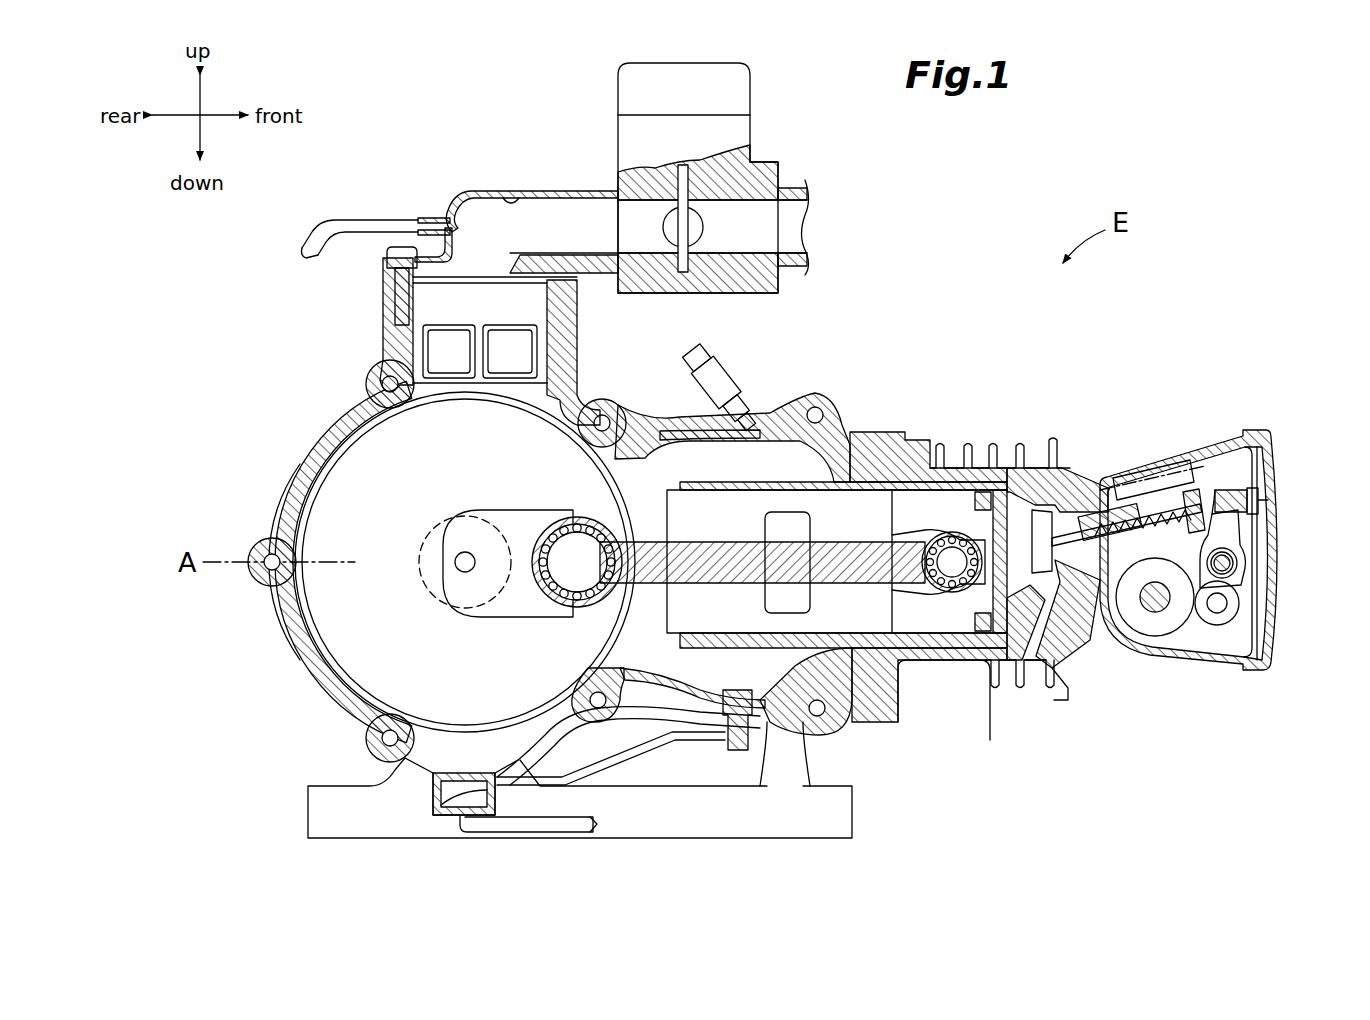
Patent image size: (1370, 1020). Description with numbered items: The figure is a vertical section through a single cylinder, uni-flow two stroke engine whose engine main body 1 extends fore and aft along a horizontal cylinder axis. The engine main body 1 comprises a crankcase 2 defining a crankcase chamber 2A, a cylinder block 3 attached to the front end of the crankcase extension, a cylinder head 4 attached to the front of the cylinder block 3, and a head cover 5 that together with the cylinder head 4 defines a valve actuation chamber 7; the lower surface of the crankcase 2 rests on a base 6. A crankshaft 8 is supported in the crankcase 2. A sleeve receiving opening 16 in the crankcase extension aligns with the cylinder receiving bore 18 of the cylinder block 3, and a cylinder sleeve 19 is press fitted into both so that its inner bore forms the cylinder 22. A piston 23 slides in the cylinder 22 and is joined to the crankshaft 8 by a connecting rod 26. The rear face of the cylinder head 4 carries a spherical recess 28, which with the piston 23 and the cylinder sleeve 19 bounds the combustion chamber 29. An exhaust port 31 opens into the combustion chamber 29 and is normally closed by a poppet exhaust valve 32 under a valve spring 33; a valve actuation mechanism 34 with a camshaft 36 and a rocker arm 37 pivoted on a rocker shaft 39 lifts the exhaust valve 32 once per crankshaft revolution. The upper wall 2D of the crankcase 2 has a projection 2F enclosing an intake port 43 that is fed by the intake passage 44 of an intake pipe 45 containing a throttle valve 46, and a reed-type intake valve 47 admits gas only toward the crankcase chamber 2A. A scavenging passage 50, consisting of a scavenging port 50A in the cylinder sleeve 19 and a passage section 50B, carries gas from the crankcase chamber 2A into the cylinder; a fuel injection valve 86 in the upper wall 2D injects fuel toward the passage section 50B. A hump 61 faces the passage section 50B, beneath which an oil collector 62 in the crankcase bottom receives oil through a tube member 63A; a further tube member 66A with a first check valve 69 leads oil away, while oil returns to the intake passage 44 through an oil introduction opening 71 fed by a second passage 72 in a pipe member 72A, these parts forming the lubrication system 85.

The engine main body 1 is at (1028, 712).
The crankcase 2 is at (312, 470).
The crankcase chamber 2A is at (380, 527).
The upper wall 2D is at (606, 414).
The projection 2F is at (577, 322).
The cylinder block 3 is at (885, 690).
The cylinder head 4 is at (1055, 698).
The head cover 5 is at (1270, 632).
The base 6 is at (852, 812).
The valve actuation chamber 7 is at (1232, 655).
The crankshaft 8 is at (348, 625).
The sleeve receiving opening 16 is at (866, 482).
The cylinder receiving bore 18 is at (928, 482).
The cylinder sleeve 19 is at (828, 645).
The cylinder 22 is at (710, 636).
The piston 23 is at (975, 640).
The connecting rod 26 is at (708, 556).
The spherical recess 28 is at (1040, 632).
The combustion chamber 29 is at (1016, 468).
The exhaust port 31 is at (1088, 510).
The exhaust valve 32 is at (1048, 500).
The valve spring 33 is at (1165, 490).
The valve actuation mechanism 34 is at (1192, 650).
The camshaft 36 is at (1157, 635).
The rocker arm 37 is at (1240, 588).
The rocker shaft 39 is at (1240, 556).
The intake port 43 is at (412, 295).
The intake passage 44 is at (512, 192).
The intake pipe 45 is at (555, 191).
The throttle valve 46 is at (698, 268).
The intake valve 47 is at (447, 372).
The scavenging passage 50 is at (768, 450).
The scavenging port 50A is at (815, 530).
The passage section 50B is at (672, 445).
The hump 61 is at (615, 668).
The oil collector 62 is at (432, 772).
The tube member 63A is at (628, 758).
The tube member 66A is at (528, 835).
The first check valve 69 is at (433, 800).
The oil introduction opening 71 is at (455, 205).
The second passage 72 is at (428, 216).
The pipe member 72A is at (376, 220).
The lubrication system 85 is at (328, 215).
The fuel injection valve 86 is at (725, 385).